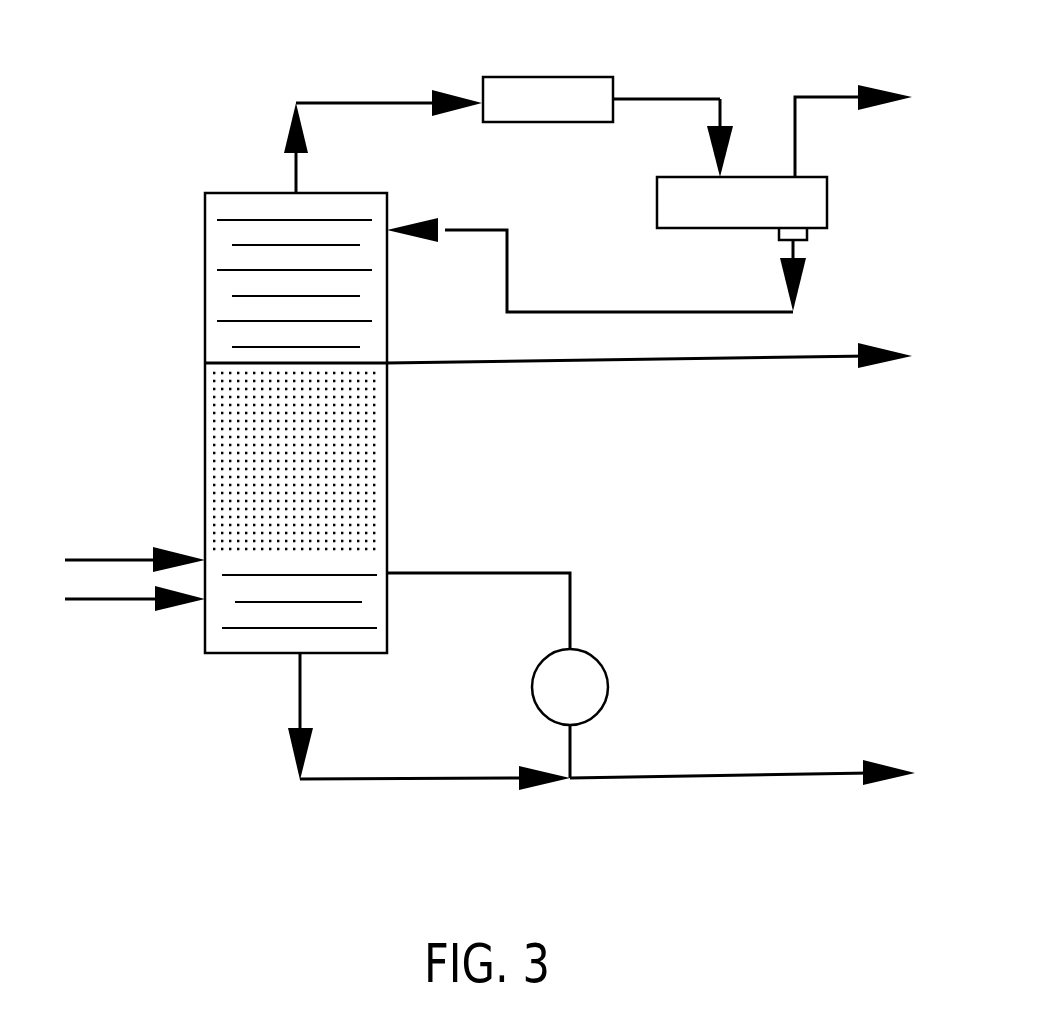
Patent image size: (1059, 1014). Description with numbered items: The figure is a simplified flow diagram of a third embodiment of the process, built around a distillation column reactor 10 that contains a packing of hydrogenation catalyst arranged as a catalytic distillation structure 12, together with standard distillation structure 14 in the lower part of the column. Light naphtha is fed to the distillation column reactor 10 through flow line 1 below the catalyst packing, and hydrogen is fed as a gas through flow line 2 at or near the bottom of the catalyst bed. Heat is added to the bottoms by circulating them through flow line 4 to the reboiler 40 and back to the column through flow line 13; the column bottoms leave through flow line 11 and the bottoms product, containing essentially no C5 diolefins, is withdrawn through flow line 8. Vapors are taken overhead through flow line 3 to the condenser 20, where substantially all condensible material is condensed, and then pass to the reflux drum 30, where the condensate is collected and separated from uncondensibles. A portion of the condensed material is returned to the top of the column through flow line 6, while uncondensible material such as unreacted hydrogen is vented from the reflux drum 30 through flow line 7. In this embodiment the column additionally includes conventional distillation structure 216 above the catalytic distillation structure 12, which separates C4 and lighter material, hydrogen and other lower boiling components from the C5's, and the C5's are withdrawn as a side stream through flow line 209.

The flow line 1 is at (105, 599).
The flow line 2 is at (108, 560).
The flow line 3 is at (396, 103).
The flow line 4 is at (572, 758).
The flow line 6 is at (718, 311).
The flow line 7 is at (838, 97).
The flow line 8 is at (740, 772).
The distillation column reactor 10 is at (389, 332).
The bottoms line 11 is at (383, 773).
The catalytic distillation structure 12 is at (358, 448).
The flow line 13 is at (572, 580).
The standard distillation structure 14 is at (345, 576).
The condenser 20 is at (583, 77).
The reflux drum 30 is at (657, 218).
The reboiler 40 is at (598, 652).
The flow line 209 is at (783, 358).
The conventional distillation structure 216 is at (242, 273).